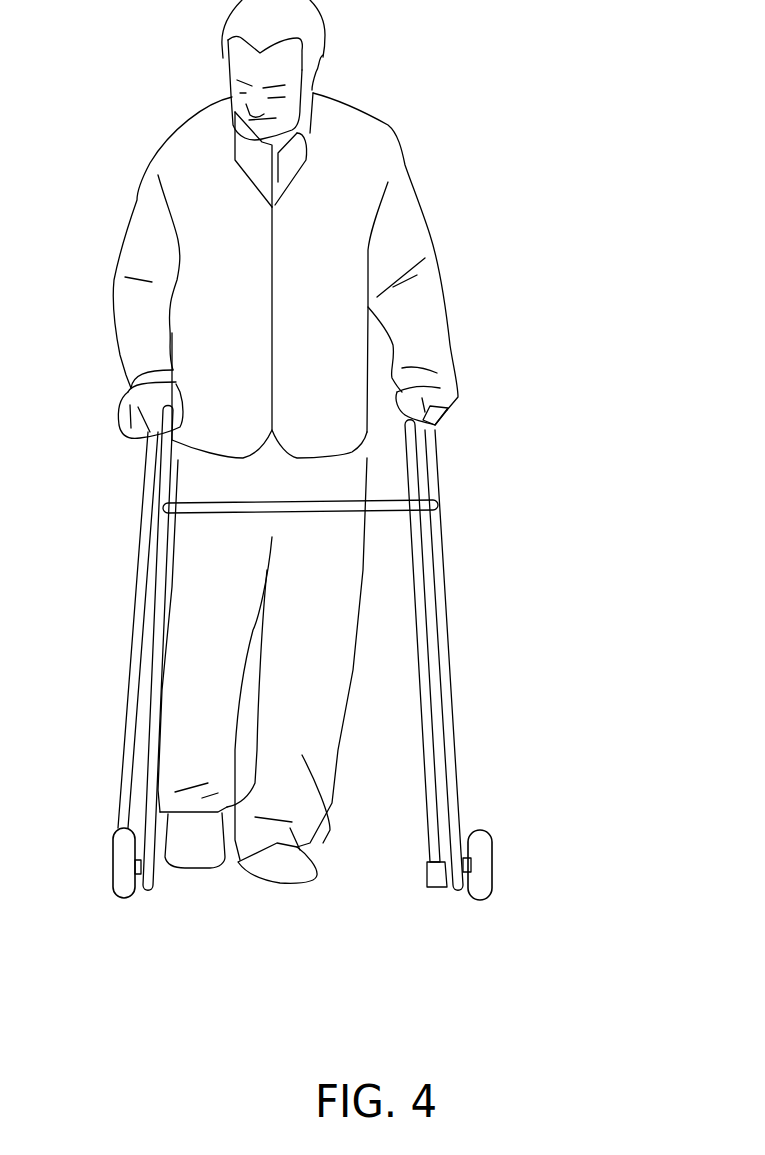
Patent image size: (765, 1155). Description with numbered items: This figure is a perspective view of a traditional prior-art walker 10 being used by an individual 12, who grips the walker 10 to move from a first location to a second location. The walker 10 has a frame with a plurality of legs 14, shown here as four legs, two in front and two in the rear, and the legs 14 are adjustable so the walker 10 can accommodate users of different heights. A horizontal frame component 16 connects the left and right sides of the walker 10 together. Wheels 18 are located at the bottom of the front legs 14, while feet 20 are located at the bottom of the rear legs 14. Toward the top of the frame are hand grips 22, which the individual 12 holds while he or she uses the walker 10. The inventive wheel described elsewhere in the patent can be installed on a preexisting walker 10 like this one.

The front wheel 10 is at (118, 877).
The user 12 is at (304, 753).
The walker frame leg 14 is at (458, 782).
The crossbar 16 is at (352, 504).
The front wheel 18 is at (492, 882).
The rear leg cap 20 is at (437, 887).
The handle grip 22 is at (448, 410).